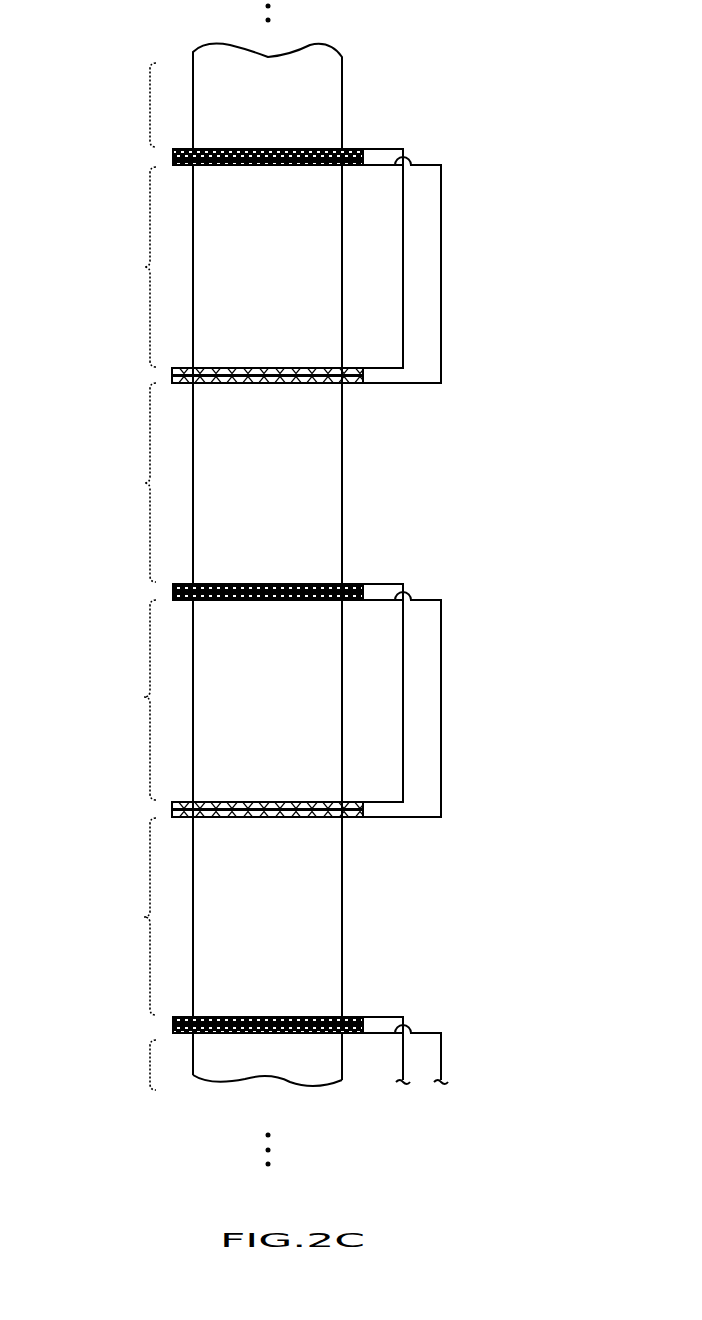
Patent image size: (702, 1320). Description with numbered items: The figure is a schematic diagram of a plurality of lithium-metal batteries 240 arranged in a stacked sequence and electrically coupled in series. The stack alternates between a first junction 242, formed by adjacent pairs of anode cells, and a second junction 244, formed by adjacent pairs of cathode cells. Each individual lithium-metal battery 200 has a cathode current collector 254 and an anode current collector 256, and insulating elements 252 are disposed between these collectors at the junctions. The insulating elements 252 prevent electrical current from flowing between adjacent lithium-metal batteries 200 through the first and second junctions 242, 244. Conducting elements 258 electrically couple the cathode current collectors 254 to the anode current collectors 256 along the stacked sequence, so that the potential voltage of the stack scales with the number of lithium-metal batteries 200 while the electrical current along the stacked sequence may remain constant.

The plurality of lithium-metal batteries 240 is at (506, 57).
The first junction 242 is at (120, 170).
The second junction 244 is at (120, 387).
The insulating element 252 is at (173, 157).
The cathode current collector 254 is at (250, 368).
The anode current collector 256 is at (252, 149).
The conducting element 258 is at (388, 149).
The lithium-metal battery 200 is at (128, 576).